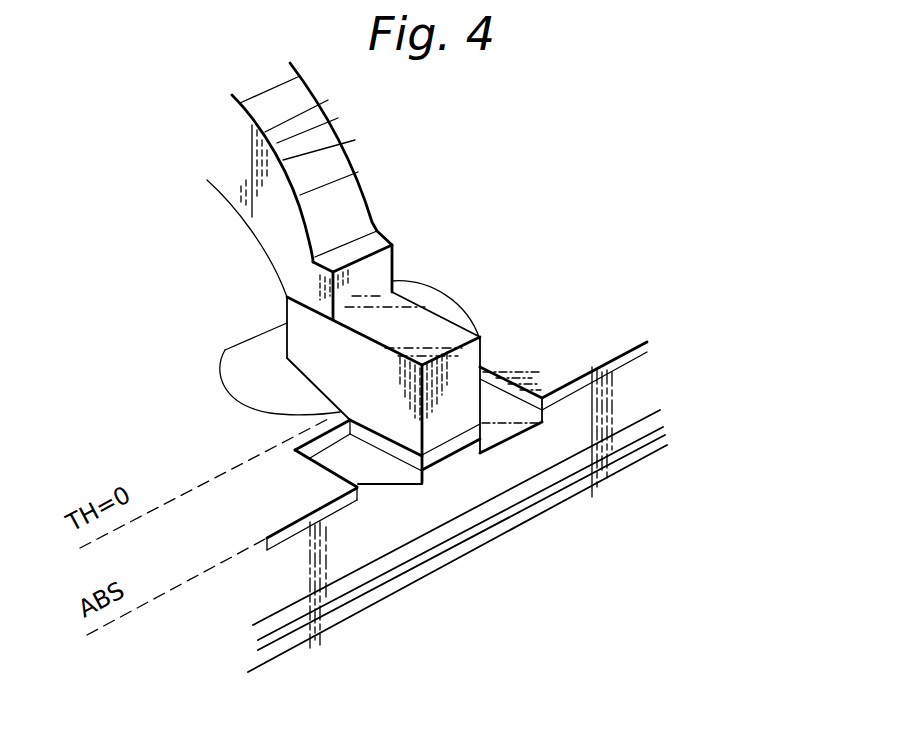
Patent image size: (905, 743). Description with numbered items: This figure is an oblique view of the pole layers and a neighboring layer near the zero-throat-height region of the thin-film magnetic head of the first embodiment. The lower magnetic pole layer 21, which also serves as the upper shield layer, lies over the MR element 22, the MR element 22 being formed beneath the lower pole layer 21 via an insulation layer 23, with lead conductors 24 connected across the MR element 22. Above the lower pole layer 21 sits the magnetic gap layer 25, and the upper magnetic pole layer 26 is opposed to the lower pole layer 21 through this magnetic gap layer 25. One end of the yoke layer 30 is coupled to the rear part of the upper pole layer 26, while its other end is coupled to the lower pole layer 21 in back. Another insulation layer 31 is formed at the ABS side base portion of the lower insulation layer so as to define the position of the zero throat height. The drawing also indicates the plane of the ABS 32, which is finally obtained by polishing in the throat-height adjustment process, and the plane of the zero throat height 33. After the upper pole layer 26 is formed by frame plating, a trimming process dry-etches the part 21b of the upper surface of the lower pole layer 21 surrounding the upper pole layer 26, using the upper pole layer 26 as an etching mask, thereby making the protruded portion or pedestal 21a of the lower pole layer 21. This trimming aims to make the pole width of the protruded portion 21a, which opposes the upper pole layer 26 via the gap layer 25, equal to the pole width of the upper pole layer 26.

The lower magnetic pole layer 21 is at (647, 390).
The protruded portion of the lower pole layer 21a is at (463, 458).
The part of the upper surface of the lower pole layer 21b is at (515, 427).
The MR element 22 is at (457, 543).
The insulation layer 23 is at (655, 423).
The lead conductors 24 is at (668, 428).
The magnetic gap layer 25 is at (647, 342).
The upper magnetic pole layer 26 is at (462, 392).
The yoke layer 30 is at (352, 215).
The insulation layer 31 is at (243, 360).
The plane of the ABS 32 is at (280, 535).
The plane of the zero throat height 33 is at (230, 471).